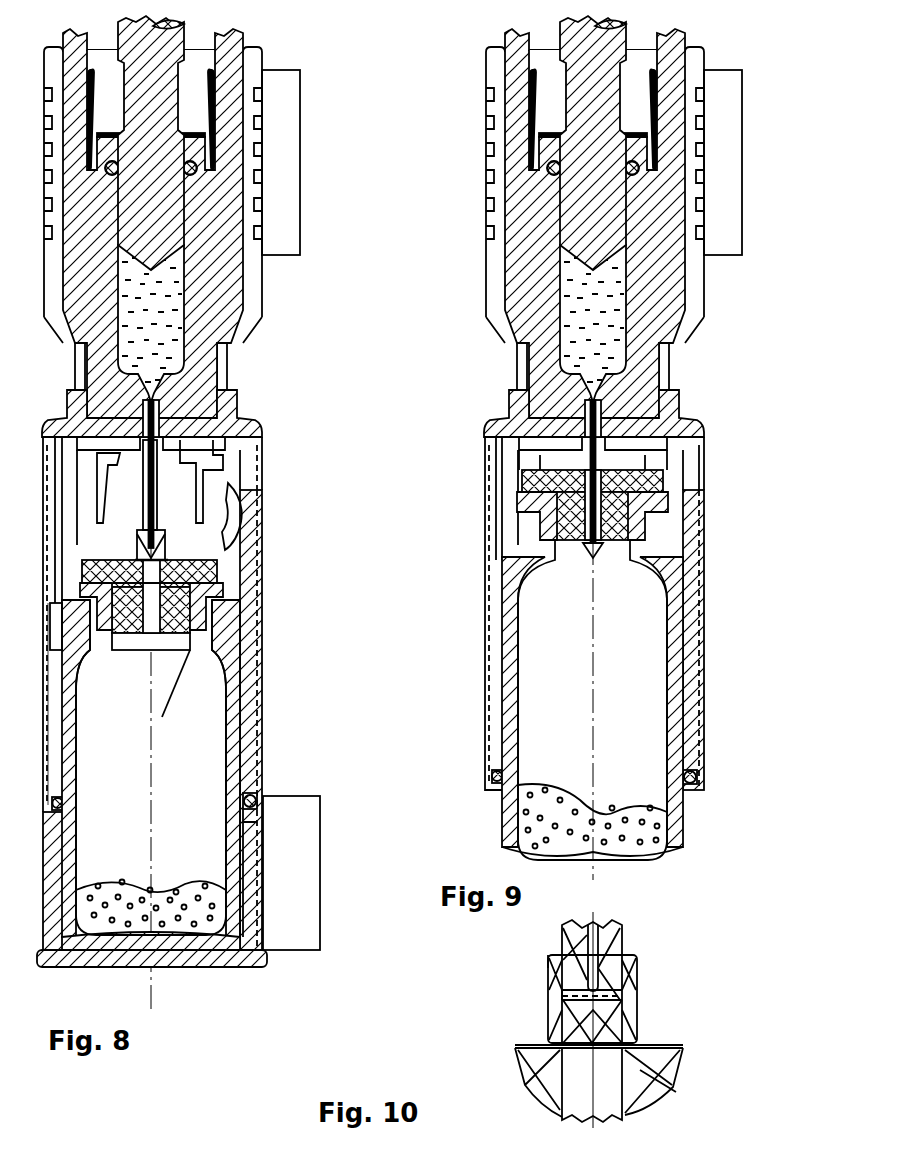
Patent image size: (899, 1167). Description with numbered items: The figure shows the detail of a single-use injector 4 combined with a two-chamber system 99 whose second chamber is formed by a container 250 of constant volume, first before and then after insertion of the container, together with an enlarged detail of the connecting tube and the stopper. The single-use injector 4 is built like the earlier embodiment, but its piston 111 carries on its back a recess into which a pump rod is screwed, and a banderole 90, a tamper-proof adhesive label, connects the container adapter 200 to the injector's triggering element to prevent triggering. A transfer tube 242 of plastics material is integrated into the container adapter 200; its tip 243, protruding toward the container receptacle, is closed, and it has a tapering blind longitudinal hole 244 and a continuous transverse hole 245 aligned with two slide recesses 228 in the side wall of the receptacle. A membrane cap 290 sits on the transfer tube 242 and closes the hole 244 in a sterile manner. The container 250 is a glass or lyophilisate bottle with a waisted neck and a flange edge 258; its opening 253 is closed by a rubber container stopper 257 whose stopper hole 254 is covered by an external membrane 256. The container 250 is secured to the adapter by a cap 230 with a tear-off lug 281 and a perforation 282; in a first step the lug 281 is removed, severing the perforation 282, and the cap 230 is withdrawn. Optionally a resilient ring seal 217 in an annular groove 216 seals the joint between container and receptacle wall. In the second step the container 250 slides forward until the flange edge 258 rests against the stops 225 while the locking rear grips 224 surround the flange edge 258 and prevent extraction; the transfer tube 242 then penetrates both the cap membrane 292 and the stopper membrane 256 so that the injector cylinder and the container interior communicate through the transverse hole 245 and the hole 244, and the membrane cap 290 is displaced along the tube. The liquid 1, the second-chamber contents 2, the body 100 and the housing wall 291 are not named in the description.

In FIG. 8, the liquid medicament 1 is at (173, 314).
In FIG. 9, the liquid medicament 1 is at (608, 288).
In FIG. 8, the powder medicament / vial 2 is at (196, 888).
In FIG. 9, the powder medicament / vial 2 is at (614, 812).
In FIG. 8, the single-use injector 4 is at (275, 60).
In FIG. 9, the single-use injector 4 is at (595, 218).
In FIG. 8, the banderole 90 is at (281, 137).
In FIG. 9, the banderole 90 is at (723, 162).
In FIG. 8, the two-chamber system 99 is at (252, 410).
In FIG. 8, the upper body / cartridge holder 100 is at (203, 204).
In FIG. 9, the upper body / cartridge holder 100 is at (650, 370).
In FIG. 8, the piston 111 is at (156, 113).
In FIG. 9, the piston 111 is at (593, 143).
In FIG. 8, the container adapter 200 is at (228, 403).
In FIG. 9, the container adapter 200 is at (674, 428).
In FIG. 8, the annular groove 216 is at (250, 794).
In FIG. 8, the resilient ring seal 217 is at (248, 813).
In FIG. 8, the locking rear grips 224 is at (166, 556).
In FIG. 9, the locking rear grips 224 is at (670, 518).
In FIG. 8, the stops 225 is at (188, 573).
In FIG. 9, the stops 225 is at (668, 491).
In FIG. 8, the slide recesses 228 is at (245, 544).
In FIG. 8, the cap 230 is at (248, 831).
In FIG. 9, the cap 230 is at (594, 613).
In FIG. 8, the transfer tube 242 is at (158, 505).
In FIG. 9, the transfer tube 242 is at (593, 471).
In FIG. 10, the transfer tube 242 is at (609, 942).
In FIG. 10, the tip 243 is at (591, 1041).
In FIG. 10, the longitudinal hole 244 is at (598, 969).
In FIG. 9, the transverse hole 245 is at (632, 541).
In FIG. 10, the transverse hole 245 is at (604, 989).
In FIG. 8, the container 250 is at (249, 641).
In FIG. 9, the container 250 is at (592, 706).
In FIG. 8, the opening 253 is at (164, 719).
In FIG. 10, the stopper hole 254 is at (623, 1082).
In FIG. 8, the membrane 256 is at (172, 560).
In FIG. 10, the membrane 256 is at (540, 1045).
In FIG. 8, the container stopper 257 is at (200, 572).
In FIG. 10, the container stopper 257 is at (548, 1088).
In FIG. 8, the flange edge 258 is at (214, 592).
In FIG. 8, the tear-off lug 281 is at (291, 818).
In FIG. 8, the perforation 282 is at (263, 858).
In FIG. 8, the membrane cap 290 is at (229, 531).
In FIG. 9, the membrane cap 290 is at (612, 455).
In FIG. 10, the membrane cap 290 is at (543, 967).
In FIG. 10, the housing wall 291 is at (629, 1024).
In FIG. 10, the cap membrane 292 is at (592, 1043).